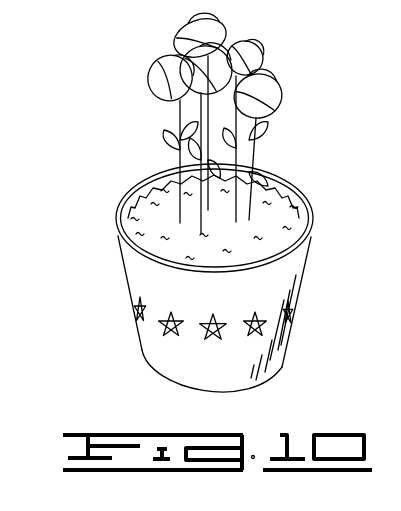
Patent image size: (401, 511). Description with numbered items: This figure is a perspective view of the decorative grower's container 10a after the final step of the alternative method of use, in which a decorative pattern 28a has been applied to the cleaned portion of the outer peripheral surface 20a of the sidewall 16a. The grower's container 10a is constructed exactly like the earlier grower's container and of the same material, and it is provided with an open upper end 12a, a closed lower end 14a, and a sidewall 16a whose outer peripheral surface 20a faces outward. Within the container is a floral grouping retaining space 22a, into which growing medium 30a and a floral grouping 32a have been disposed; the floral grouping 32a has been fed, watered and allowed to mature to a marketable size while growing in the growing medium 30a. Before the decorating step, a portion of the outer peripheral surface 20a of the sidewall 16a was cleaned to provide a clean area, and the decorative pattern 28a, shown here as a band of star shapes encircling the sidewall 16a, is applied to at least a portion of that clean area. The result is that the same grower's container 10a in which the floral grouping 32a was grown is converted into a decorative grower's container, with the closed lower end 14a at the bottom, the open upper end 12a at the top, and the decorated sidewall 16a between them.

The grower's container 10a is at (118, 88).
The open upper end 12a is at (147, 180).
The closed lower end 14a is at (265, 380).
The sidewall 16a is at (137, 312).
The outer peripheral surface 20a is at (278, 278).
The floral grouping retaining space 22a is at (260, 193).
The decorative pattern 28a is at (272, 328).
The growing medium 30a is at (153, 220).
The floral grouping 32a is at (257, 48).